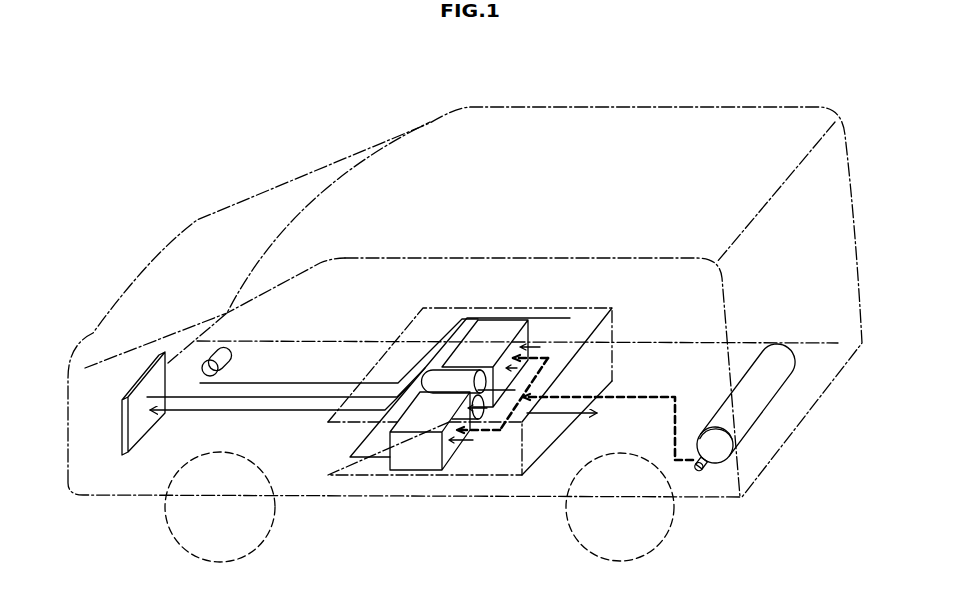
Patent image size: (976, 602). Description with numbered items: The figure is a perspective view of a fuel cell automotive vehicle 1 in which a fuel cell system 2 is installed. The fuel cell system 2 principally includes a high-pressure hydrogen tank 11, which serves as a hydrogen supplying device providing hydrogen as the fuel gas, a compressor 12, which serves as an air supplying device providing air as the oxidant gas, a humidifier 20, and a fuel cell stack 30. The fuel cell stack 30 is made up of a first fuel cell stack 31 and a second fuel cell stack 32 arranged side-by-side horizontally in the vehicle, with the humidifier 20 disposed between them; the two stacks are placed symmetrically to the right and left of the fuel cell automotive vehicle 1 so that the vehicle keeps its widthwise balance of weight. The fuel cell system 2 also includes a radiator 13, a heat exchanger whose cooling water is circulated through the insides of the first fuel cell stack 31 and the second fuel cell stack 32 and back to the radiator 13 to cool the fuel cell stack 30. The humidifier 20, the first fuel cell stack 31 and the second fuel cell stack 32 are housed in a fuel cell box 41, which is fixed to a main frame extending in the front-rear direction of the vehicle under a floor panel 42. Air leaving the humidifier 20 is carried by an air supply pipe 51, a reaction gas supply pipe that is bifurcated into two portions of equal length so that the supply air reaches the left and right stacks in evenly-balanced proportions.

The fuel cell automotive vehicle 1 is at (654, 99).
The fuel cell system 2 is at (463, 274).
The high-pressure hydrogen tank 11 is at (772, 348).
The compressor 12 is at (228, 349).
The radiator 13 is at (128, 453).
The humidifier 20 is at (460, 376).
The fuel cell stack 30 is at (533, 414).
The first fuel cell stack 31 is at (488, 337).
The second fuel cell stack 32 is at (400, 471).
The fuel cell box 41 is at (335, 476).
The floor panel 42 is at (505, 498).
The air supply pipe 51 is at (527, 381).